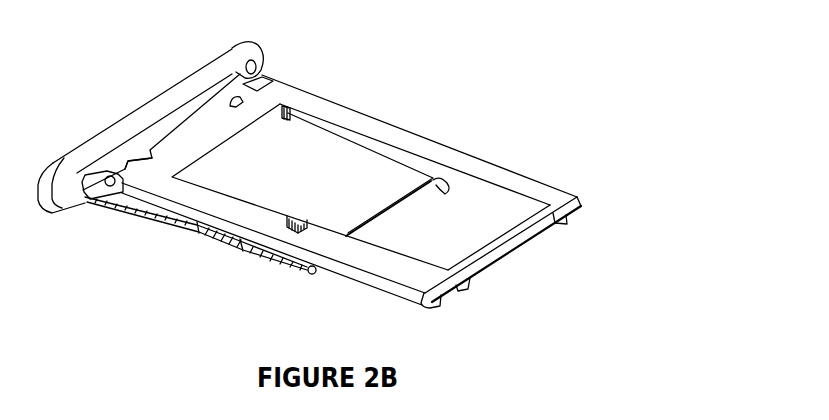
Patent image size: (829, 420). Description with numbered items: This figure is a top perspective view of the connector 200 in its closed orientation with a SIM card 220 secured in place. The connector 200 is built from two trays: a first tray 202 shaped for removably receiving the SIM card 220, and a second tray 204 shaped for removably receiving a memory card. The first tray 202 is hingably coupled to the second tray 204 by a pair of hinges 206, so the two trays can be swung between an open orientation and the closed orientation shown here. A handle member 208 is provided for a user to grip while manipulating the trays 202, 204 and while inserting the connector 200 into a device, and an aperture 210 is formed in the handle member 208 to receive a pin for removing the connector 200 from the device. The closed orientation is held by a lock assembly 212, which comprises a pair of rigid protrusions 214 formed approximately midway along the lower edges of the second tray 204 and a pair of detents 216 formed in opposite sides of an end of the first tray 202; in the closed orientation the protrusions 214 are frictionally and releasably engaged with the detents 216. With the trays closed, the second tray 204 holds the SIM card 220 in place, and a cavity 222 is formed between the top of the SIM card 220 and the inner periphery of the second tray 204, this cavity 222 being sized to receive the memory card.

The connector 200 is at (603, 101).
The first tray 202 is at (109, 188).
The second tray 204 is at (581, 208).
The hinges 206 is at (236, 94).
The handle member 208 is at (70, 147).
The aperture 210 is at (247, 88).
The lock assembly 212 is at (308, 277).
The rigid protrusions 214 is at (440, 184).
The detents 216 is at (452, 200).
The SIM card 220 is at (320, 187).
The cavity 222 is at (278, 168).